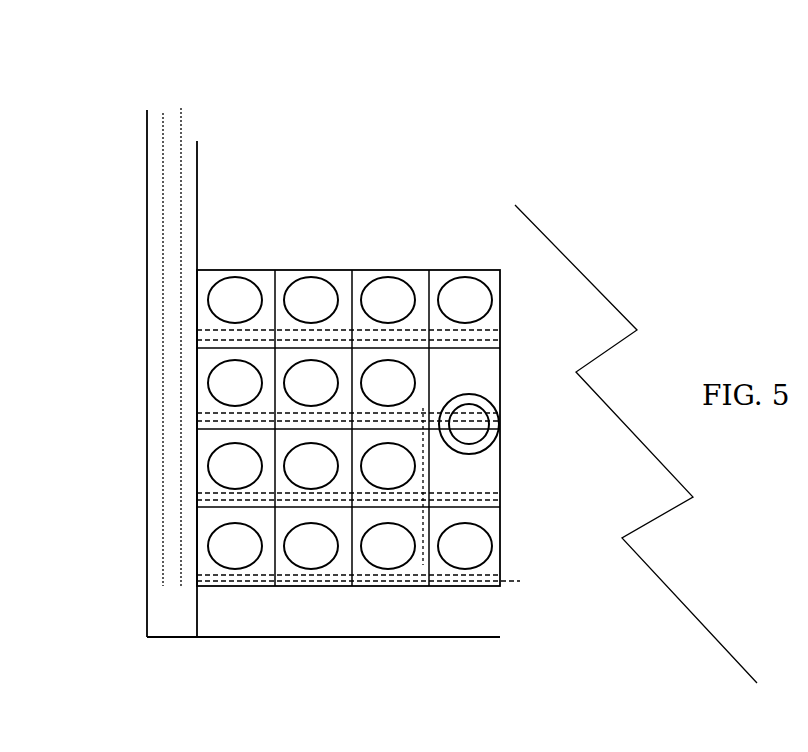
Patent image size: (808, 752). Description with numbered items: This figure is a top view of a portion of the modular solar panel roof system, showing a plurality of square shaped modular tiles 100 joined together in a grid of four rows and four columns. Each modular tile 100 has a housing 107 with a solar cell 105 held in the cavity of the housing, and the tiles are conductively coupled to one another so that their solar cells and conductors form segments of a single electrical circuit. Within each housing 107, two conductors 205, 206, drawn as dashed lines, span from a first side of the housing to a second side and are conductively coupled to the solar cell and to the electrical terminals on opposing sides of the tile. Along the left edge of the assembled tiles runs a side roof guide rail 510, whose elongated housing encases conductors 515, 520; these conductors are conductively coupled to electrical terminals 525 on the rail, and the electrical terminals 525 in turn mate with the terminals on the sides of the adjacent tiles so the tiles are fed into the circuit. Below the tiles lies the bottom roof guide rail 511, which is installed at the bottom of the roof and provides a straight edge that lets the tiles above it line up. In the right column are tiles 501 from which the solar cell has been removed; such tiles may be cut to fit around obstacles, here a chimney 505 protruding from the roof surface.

The modular tile 100 is at (468, 268).
The pixel 105 is at (395, 303).
The housing 107 is at (293, 270).
The conductor 205 is at (483, 332).
The conductor 206 is at (500, 340).
The tile 501 is at (462, 385).
The chimney 505 is at (485, 446).
The side roof guide rail 510 is at (193, 267).
The bottom roof guide rail 511 is at (335, 625).
The conductor 515 is at (163, 115).
The conductor 520 is at (185, 115).
The electrical terminal 525 is at (197, 347).